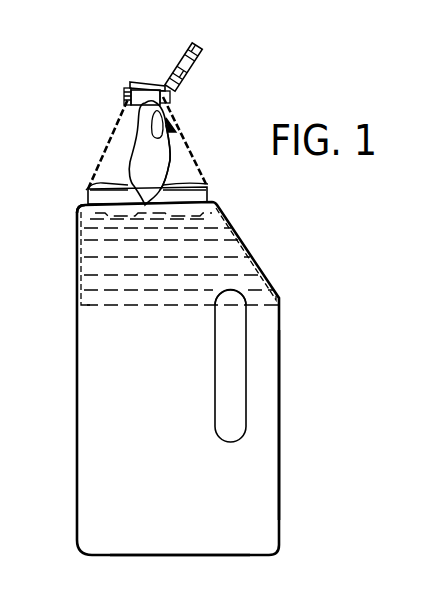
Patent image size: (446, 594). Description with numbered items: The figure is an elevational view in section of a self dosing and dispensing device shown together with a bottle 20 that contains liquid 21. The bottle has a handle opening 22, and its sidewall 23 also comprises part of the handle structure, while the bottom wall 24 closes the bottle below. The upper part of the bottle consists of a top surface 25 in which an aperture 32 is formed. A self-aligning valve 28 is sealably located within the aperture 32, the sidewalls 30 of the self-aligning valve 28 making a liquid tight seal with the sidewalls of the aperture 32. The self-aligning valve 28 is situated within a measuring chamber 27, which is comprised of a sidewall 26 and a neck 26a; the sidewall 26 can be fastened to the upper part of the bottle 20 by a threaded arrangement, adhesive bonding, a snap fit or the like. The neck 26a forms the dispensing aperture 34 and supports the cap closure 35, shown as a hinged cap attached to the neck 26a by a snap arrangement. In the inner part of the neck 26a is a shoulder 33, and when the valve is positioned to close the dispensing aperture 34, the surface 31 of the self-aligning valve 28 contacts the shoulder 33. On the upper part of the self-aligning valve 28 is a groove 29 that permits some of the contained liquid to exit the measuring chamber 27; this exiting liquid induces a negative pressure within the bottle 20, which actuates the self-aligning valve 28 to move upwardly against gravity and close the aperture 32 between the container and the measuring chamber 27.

The bottle 20 is at (255, 256).
The liquid 21 is at (247, 290).
The handle opening 22 is at (238, 383).
The sidewall 23 is at (279, 442).
The bottom wall 24 is at (194, 556).
The top surface 25 is at (84, 191).
The sidewall 26 is at (183, 137).
The neck 26a is at (124, 97).
The measuring chamber 27 is at (175, 166).
The self-aligning valve 28 is at (150, 150).
The groove 29 is at (152, 121).
The sidewalls 30 is at (208, 175).
The surface 31 is at (170, 126).
The aperture 32 is at (126, 170).
The shoulder 33 is at (143, 88).
The dispensing aperture 34 is at (142, 82).
The cap closure 35 is at (203, 60).